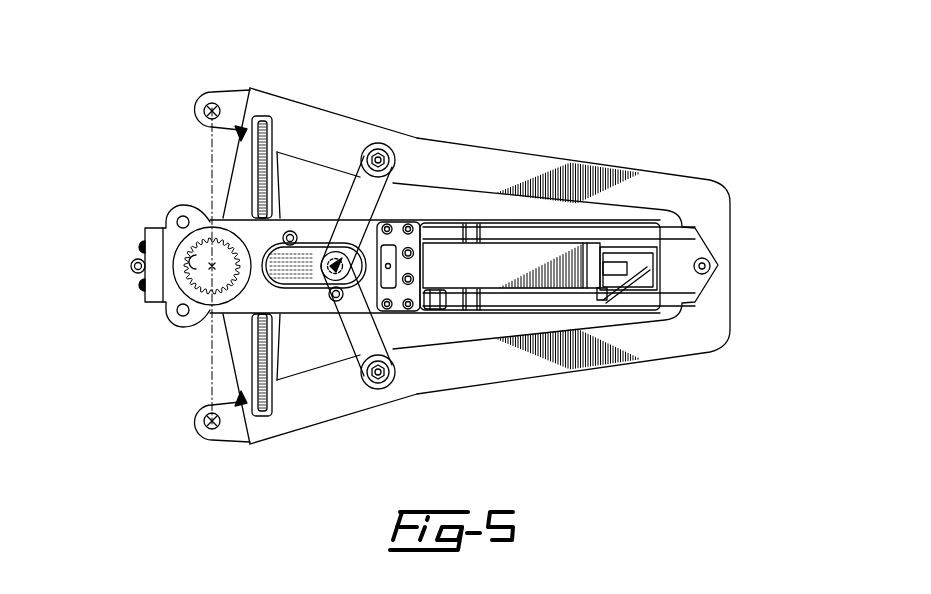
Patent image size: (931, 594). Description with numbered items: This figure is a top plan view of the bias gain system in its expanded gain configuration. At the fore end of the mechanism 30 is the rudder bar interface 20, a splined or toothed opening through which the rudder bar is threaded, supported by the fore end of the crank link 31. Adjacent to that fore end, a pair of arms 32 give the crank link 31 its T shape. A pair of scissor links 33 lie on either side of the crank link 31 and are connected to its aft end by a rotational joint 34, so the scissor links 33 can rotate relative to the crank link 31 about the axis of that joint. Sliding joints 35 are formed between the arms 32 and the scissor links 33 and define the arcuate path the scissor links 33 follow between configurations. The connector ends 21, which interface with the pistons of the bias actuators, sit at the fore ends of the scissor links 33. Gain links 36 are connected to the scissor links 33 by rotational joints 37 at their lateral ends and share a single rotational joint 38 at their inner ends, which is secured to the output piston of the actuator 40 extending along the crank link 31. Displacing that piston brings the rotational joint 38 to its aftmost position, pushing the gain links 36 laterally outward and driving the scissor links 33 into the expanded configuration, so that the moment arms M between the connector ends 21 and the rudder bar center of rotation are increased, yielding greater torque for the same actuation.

The rudder bar interface 20 is at (148, 260).
The connector ends 21 is at (199, 96).
The mechanism 30 is at (498, 128).
The crank link 31 is at (313, 218).
The arms 32 is at (237, 137).
The scissor links 33 is at (438, 140).
The rotational joint 34 is at (712, 266).
The sliding joints 35 is at (282, 168).
The gain links 36 is at (365, 199).
The rotational joints 37 is at (380, 156).
The rotational joint 38 is at (330, 278).
The actuator 40 is at (495, 278).
The moment arms M is at (211, 190).